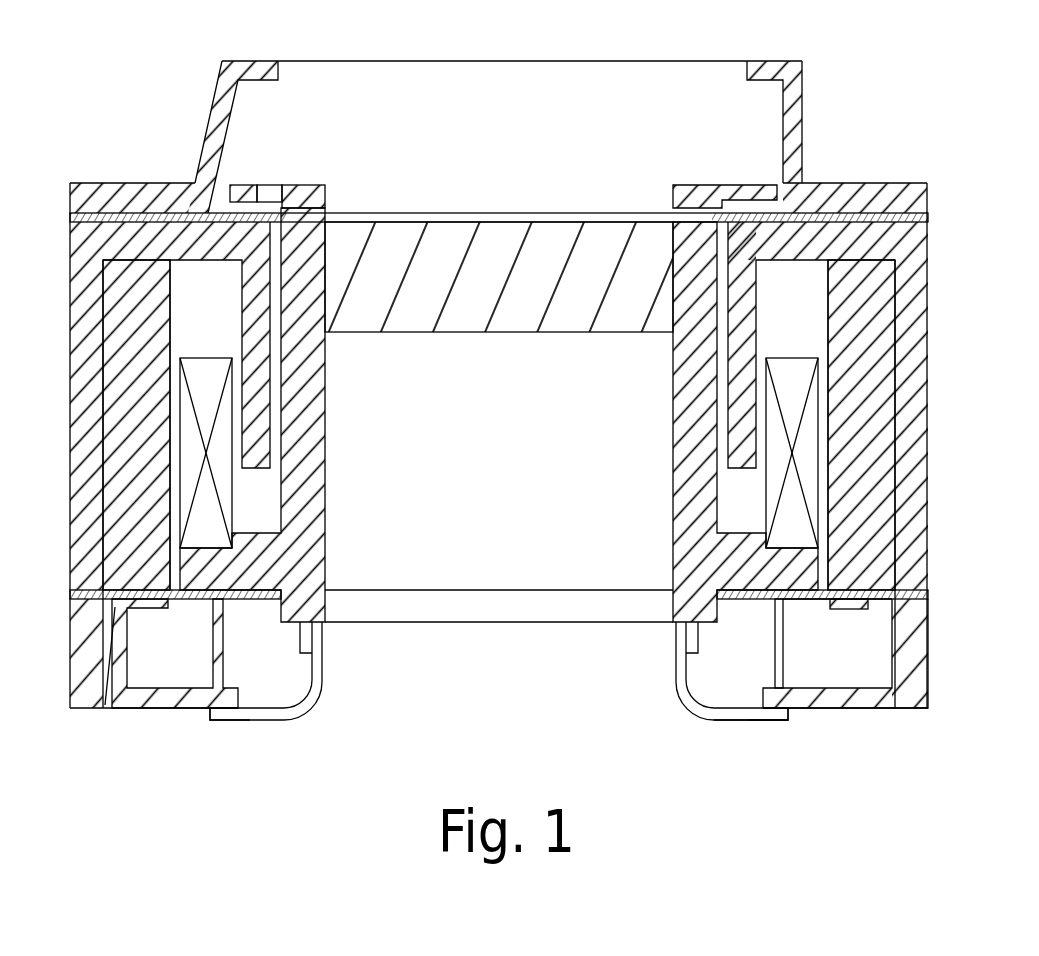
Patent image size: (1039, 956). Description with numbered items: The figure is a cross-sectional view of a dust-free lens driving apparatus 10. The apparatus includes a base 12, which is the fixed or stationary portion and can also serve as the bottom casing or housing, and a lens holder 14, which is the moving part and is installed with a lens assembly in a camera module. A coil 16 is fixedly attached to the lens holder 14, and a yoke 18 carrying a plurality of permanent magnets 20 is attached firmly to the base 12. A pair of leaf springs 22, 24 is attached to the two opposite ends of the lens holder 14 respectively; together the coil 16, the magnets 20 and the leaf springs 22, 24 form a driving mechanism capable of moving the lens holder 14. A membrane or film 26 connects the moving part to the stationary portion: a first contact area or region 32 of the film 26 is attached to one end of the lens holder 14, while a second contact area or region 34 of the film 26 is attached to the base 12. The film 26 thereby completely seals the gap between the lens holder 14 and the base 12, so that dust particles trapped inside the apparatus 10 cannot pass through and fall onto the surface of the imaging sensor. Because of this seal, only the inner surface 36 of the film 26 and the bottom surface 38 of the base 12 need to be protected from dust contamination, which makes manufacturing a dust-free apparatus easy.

The dust-free lens driving apparatus 10 is at (955, 105).
The base 12 is at (928, 662).
The lens holder 14 is at (675, 472).
The coil 16 is at (815, 470).
The yoke 18 is at (928, 322).
The permanent magnets 20 is at (880, 412).
The leaf spring 22 is at (928, 218).
The leaf spring 24 is at (930, 596).
The membrane or film 26 is at (707, 720).
The first contact area or region 32 is at (322, 640).
The second contact area or region 34 is at (230, 718).
The inner surface 36 is at (315, 690).
The bottom surface 38 is at (140, 707).